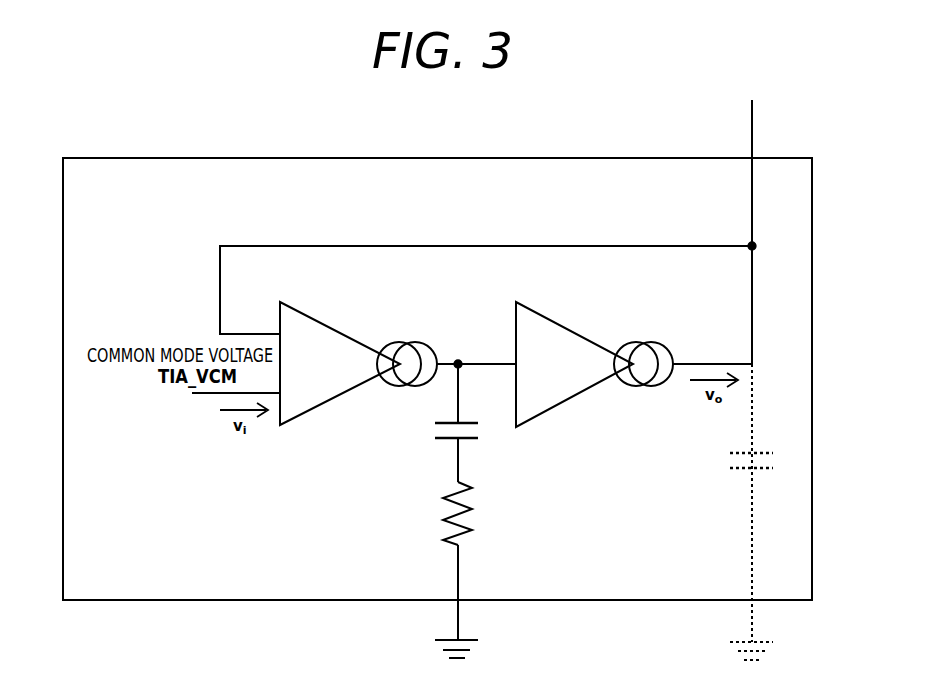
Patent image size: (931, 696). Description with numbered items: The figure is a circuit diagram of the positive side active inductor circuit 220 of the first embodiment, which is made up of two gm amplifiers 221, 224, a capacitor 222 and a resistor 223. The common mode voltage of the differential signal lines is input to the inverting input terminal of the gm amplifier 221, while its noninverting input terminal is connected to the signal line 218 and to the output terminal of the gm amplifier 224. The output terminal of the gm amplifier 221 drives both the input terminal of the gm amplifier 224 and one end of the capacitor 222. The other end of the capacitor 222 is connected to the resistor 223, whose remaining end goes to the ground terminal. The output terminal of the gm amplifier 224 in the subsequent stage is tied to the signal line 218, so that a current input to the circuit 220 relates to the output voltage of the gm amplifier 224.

The signal line 218 is at (750, 216).
The positive side active inductor circuit 220 is at (812, 186).
The gm amplifier 221 is at (340, 330).
The capacitor 222 is at (420, 448).
The resistor 223 is at (497, 503).
The gm amplifier 224 is at (577, 330).